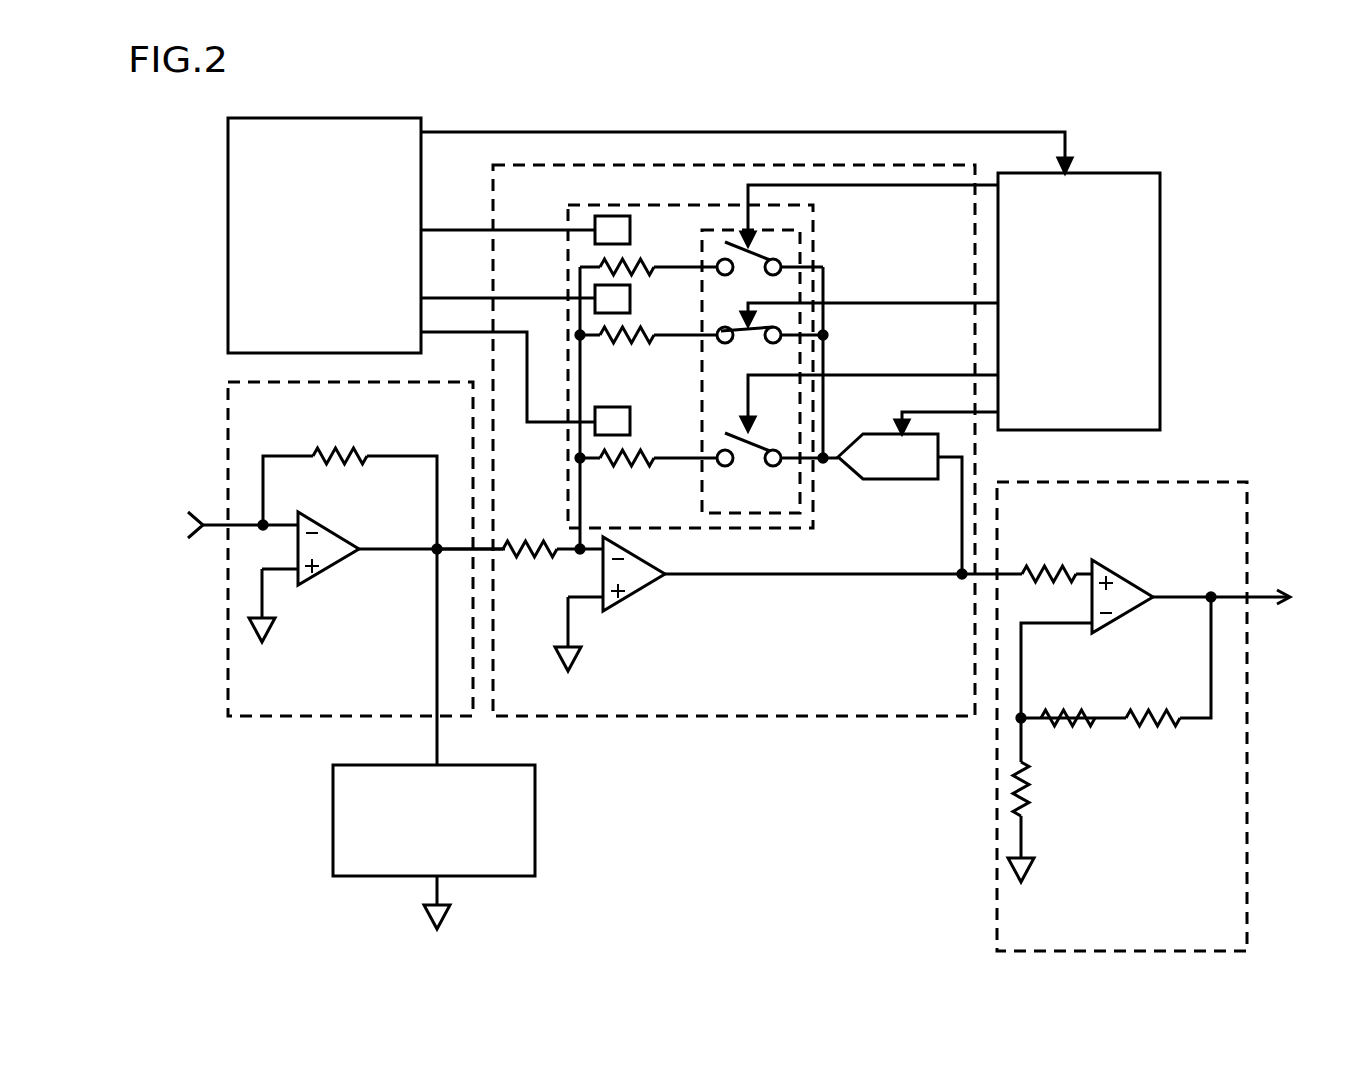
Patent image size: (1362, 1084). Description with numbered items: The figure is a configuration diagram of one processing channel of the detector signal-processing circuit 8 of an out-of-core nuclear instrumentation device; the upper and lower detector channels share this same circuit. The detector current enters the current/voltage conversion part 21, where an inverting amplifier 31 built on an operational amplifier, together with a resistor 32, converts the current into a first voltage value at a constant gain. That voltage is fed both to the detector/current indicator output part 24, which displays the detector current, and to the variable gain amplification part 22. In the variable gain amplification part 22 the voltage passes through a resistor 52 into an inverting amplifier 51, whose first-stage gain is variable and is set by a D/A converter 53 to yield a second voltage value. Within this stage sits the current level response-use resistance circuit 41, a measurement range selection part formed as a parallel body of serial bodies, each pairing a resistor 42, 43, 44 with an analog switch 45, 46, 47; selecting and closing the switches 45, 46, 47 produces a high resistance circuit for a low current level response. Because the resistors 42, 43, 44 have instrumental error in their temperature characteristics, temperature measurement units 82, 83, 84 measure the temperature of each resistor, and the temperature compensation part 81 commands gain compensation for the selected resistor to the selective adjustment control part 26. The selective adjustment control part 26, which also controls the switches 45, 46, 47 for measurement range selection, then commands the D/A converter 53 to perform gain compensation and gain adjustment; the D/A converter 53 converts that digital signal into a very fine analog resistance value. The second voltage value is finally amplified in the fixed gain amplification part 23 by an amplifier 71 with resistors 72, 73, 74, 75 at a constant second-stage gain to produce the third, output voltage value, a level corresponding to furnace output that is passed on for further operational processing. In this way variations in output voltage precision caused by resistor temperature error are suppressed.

The detector signal-processing circuit 8 is at (1125, 140).
The temperature compensation part 81 is at (225, 212).
The temperature measurement unit 82 is at (593, 432).
The temperature measurement unit 83 is at (595, 297).
The temperature measurement unit 84 is at (595, 222).
The current/voltage conversion part 21 is at (320, 601).
The inverting amplifier 31 is at (333, 570).
The resistor 32 is at (338, 442).
The variable gain amplification part 22 is at (745, 717).
The current level response-use resistance circuit 41 is at (753, 532).
The resistor 42 is at (638, 478).
The resistor 43 is at (638, 353).
The resistor 44 is at (638, 282).
The switch 45 is at (762, 446).
The switch 46 is at (762, 323).
The switch 47 is at (760, 256).
The inverting amplifier 51 is at (645, 588).
The resistor 52 is at (530, 560).
The D/A converter 53 is at (905, 482).
The selective adjustment control part 26 is at (1160, 345).
The fixed gain amplification part 23 is at (995, 845).
The amplifier 71 is at (1105, 563).
The resistor 72 is at (1037, 558).
The resistor 73 is at (1068, 728).
The resistor 74 is at (1153, 728).
The resistor 75 is at (1025, 790).
The detector/current indicator output part 24 is at (535, 835).